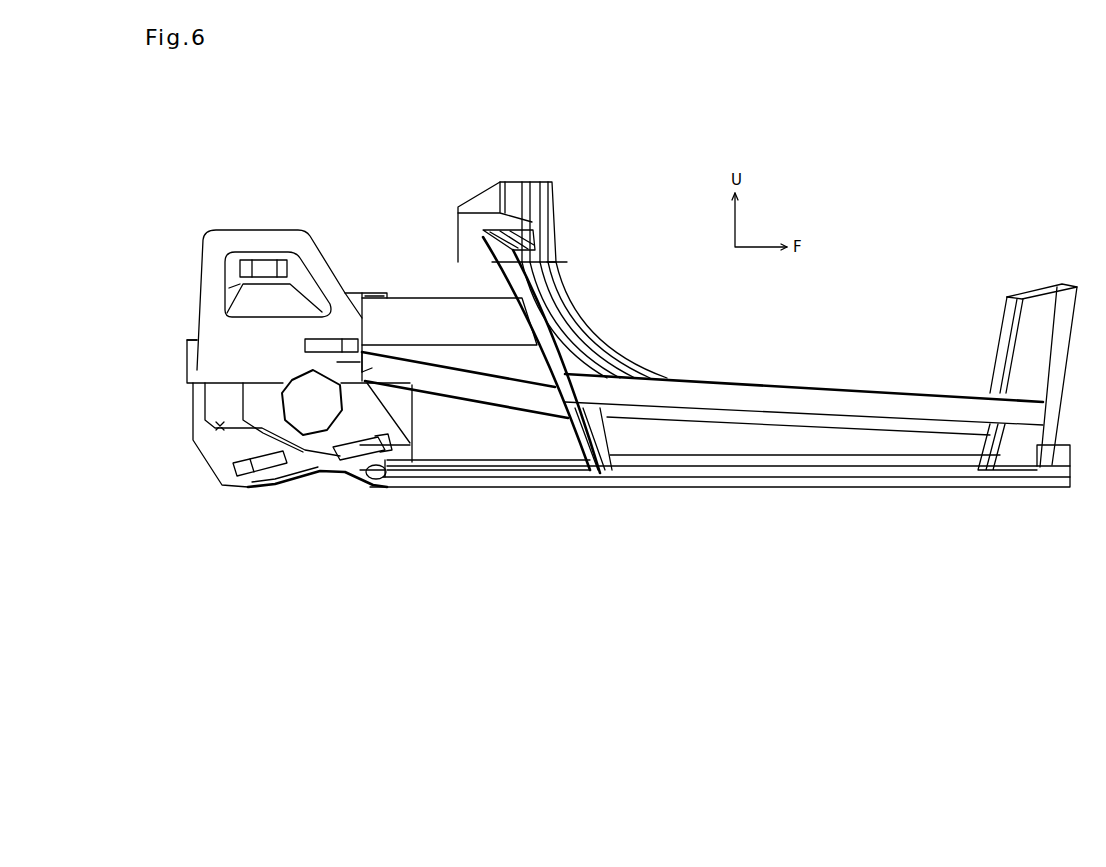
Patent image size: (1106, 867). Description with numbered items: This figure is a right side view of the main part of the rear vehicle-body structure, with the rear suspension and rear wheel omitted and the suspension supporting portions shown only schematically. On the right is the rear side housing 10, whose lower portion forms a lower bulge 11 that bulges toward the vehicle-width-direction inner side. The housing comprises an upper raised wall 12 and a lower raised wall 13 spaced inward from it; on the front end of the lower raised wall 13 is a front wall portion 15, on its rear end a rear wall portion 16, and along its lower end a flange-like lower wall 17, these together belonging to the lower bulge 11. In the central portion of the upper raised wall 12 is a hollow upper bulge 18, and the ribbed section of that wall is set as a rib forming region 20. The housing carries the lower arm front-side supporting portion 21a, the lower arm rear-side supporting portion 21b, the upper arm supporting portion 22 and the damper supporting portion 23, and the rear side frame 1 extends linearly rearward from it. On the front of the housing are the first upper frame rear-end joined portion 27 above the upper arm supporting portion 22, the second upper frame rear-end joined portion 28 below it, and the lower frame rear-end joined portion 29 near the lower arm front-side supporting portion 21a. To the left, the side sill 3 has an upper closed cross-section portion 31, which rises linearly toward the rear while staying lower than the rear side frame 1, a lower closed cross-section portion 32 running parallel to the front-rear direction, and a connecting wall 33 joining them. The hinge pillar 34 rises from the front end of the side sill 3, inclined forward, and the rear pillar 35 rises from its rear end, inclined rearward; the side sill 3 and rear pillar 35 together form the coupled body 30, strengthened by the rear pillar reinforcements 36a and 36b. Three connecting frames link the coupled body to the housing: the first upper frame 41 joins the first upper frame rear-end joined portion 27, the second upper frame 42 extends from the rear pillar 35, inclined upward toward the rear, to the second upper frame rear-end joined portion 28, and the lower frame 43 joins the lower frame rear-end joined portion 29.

The rear side frame 1 is at (186, 376).
The side sill 3 is at (721, 383).
The rear side housing 10 is at (221, 230).
The lower bulge 11 is at (221, 426).
The upper raised wall 12 is at (256, 231).
The lower raised wall 13 is at (375, 472).
The front wall portion 15 is at (413, 412).
The rear wall portion 16 is at (193, 395).
The lower wall 17 is at (303, 480).
The upper bulge 18 is at (229, 288).
The rib forming region 20 is at (352, 320).
The lower arm front-side supporting portion 21a is at (360, 461).
The lower arm rear-side supporting portion 21b is at (253, 482).
The upper arm supporting portion 22 is at (331, 337).
The damper supporting portion 23 is at (268, 260).
The first upper frame rear-end joined portion 27 is at (358, 294).
The second upper frame rear-end joined portion 28 is at (362, 372).
The lower frame rear-end joined portion 29 is at (395, 475).
The coupled body 30 is at (650, 489).
The upper closed cross-section portion 31 is at (845, 386).
The lower closed cross-section portion 32 is at (740, 488).
The connecting wall 33 is at (758, 435).
The hinge pillar 34 is at (1057, 389).
The rear pillar 35 is at (560, 427).
The rear pillar reinforcement 36a is at (554, 212).
The rear pillar reinforcement 36b is at (590, 304).
The first upper frame 41 is at (460, 297).
The second upper frame 42 is at (455, 400).
The lower frame 43 is at (477, 488).